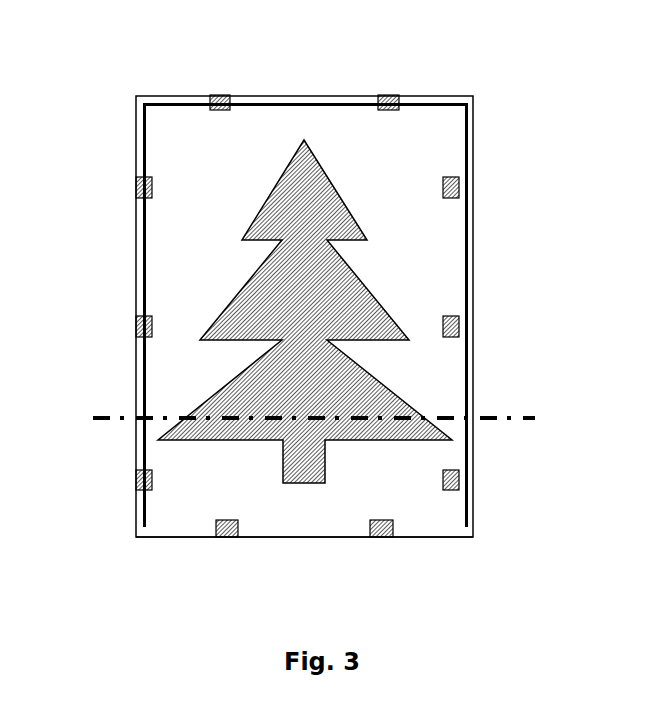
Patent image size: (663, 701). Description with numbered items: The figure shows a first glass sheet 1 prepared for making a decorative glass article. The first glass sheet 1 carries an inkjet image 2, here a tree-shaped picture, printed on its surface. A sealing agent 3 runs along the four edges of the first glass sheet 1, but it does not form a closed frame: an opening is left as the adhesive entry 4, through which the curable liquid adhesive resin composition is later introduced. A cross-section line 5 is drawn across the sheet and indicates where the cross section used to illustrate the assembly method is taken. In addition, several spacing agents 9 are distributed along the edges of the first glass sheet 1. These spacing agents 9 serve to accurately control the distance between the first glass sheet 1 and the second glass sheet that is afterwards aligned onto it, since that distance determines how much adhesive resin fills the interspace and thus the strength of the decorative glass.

The first glass sheet 1 is at (210, 157).
The inkjet image 2 is at (333, 310).
The sealing agent 3 is at (468, 163).
The adhesive entry 4 is at (305, 538).
The cross-section line 5 is at (122, 416).
The spacing agents 9 is at (220, 96).